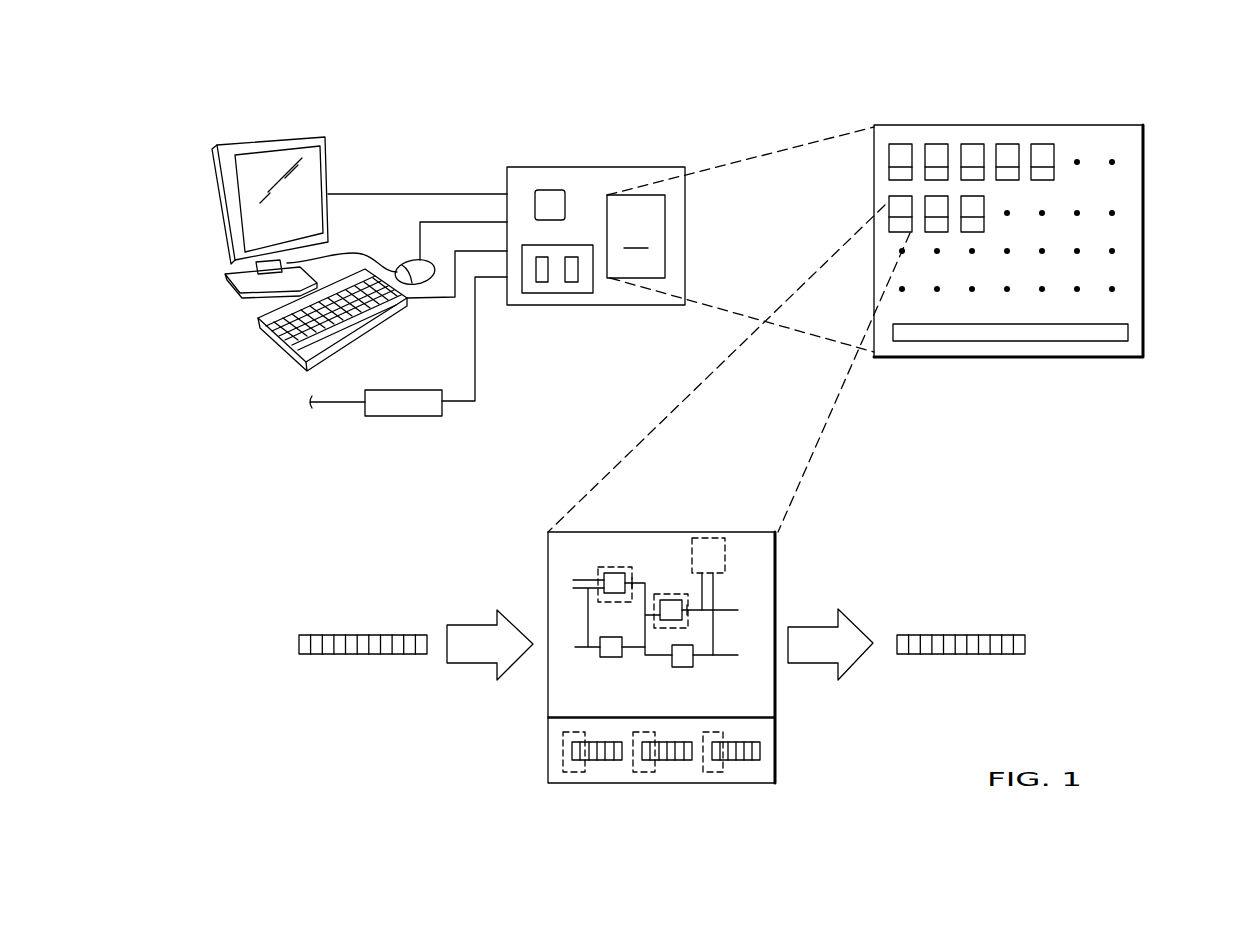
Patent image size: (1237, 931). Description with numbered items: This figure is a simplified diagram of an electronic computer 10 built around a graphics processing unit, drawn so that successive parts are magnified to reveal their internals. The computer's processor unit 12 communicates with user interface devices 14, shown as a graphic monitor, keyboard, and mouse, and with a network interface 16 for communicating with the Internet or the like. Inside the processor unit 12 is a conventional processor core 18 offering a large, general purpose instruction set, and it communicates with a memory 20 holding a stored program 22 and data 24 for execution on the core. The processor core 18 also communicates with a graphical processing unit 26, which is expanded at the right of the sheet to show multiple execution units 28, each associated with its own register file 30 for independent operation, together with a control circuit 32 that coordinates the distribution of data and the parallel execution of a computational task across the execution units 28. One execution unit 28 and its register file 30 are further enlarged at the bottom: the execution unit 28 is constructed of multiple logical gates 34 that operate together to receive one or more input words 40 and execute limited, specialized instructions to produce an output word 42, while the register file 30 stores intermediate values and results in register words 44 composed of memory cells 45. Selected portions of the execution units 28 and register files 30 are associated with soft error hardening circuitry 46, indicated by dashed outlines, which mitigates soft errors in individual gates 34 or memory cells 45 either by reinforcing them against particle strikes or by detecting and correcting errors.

The electronic computer 10 is at (655, 93).
The processor unit 12 is at (527, 167).
The user interface devices 14 is at (250, 122).
The network interface 16 is at (400, 417).
The processor core 18 is at (548, 190).
The memory 20 is at (530, 293).
The stored program 22 is at (572, 282).
The data 24 is at (543, 282).
The graphical processing unit 26 is at (1168, 102).
The execution unit 28 is at (1007, 152).
The register file 30 is at (897, 222).
The control circuit 32 is at (1010, 332).
The logical gates 34 is at (615, 637).
The input word 40 is at (362, 635).
The output word 42 is at (963, 635).
The register word 44 is at (605, 770).
The memory cells 45 is at (613, 742).
The soft error hardening circuitry 46 is at (697, 538).